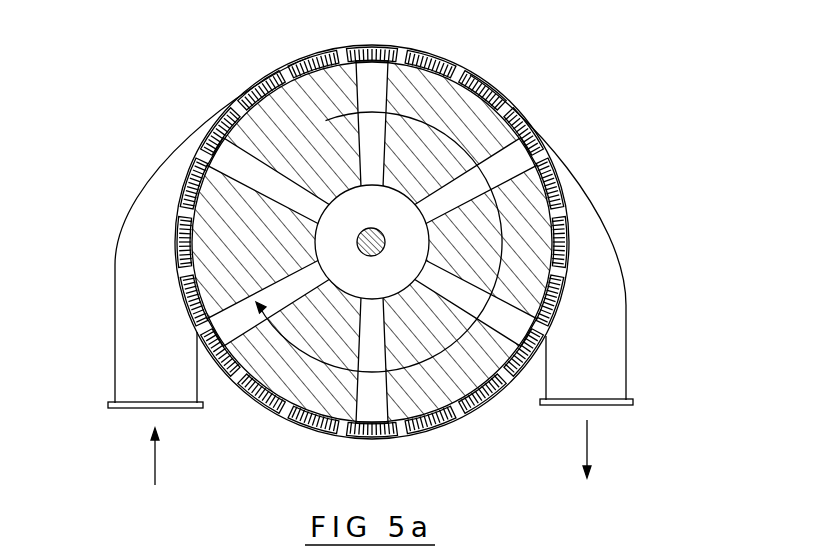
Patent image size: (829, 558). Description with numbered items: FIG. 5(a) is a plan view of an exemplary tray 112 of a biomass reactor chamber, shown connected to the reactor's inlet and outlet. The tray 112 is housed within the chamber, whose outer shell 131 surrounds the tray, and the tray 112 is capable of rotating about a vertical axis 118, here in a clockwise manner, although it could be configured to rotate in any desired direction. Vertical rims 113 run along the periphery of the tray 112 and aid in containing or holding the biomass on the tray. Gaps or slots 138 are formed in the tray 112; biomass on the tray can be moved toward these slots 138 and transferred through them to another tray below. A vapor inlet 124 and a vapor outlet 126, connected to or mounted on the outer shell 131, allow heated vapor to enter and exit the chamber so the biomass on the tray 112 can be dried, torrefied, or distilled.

The tray 112 is at (452, 60).
The vertical rims 113 is at (468, 124).
The vertical axis 118 is at (556, 197).
The vapor inlet 124 is at (142, 380).
The vapor outlet 126 is at (595, 343).
The outer shell 131 is at (453, 100).
The slots 138 is at (260, 175).